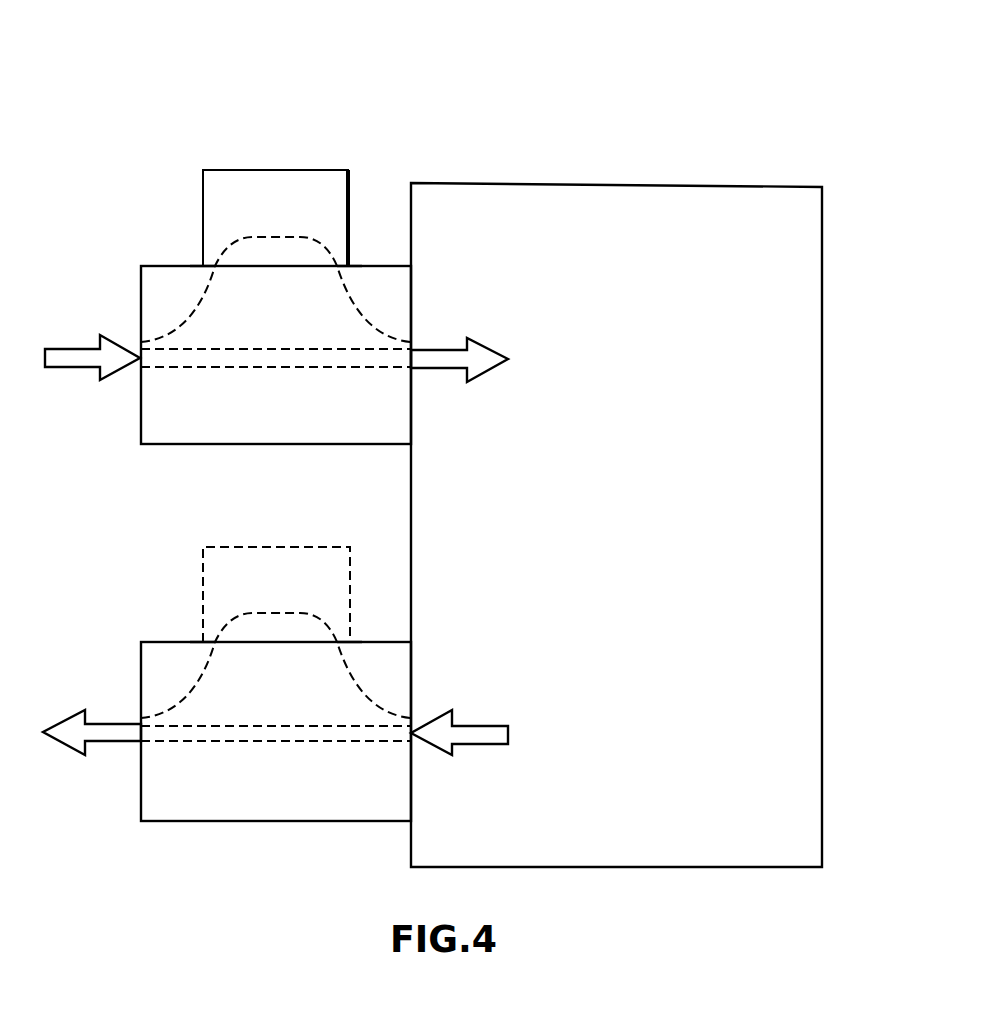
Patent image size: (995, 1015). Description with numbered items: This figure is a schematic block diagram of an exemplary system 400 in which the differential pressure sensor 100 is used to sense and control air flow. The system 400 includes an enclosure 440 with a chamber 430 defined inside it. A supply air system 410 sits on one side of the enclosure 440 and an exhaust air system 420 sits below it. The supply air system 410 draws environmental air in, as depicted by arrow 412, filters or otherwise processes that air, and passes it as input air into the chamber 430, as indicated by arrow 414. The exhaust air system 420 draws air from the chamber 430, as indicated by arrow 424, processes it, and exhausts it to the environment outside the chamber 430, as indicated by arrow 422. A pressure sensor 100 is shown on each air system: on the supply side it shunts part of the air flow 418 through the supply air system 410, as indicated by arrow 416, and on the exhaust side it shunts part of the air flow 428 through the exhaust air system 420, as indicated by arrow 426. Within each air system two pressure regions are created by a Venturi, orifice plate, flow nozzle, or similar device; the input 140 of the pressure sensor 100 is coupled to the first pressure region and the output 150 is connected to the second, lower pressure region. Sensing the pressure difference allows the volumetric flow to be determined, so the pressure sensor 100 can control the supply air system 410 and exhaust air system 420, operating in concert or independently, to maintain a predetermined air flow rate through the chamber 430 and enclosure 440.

The system 400 is at (212, 60).
The differential pressure sensor 100 is at (200, 180).
The input 140 is at (215, 267).
The output 150 is at (337, 267).
The supply air system 410 is at (180, 430).
The arrow 412 is at (70, 348).
The arrow 414 is at (430, 350).
The arrow 416 is at (208, 292).
The air flow 418 is at (273, 367).
The exhaust air system 420 is at (185, 797).
The arrow 422 is at (110, 723).
The arrow 424 is at (480, 726).
The arrow 426 is at (292, 613).
The air flow 428 is at (280, 741).
The chamber 430 is at (633, 383).
The enclosure 440 is at (702, 185).